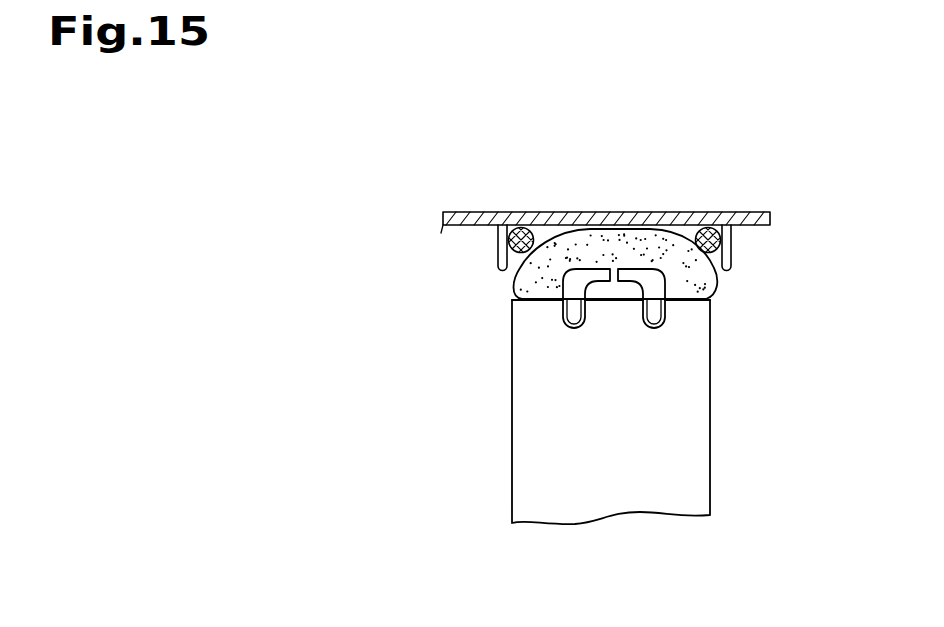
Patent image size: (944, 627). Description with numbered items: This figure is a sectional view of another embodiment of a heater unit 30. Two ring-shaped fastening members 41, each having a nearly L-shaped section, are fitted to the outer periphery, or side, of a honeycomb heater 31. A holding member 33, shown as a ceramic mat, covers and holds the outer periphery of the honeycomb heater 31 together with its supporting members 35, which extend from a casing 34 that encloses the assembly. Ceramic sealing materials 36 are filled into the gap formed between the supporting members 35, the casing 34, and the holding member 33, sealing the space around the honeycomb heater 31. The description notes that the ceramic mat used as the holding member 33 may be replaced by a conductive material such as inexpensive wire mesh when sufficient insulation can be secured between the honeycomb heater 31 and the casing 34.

The heater unit 30 is at (668, 169).
The honeycomb heater 31 is at (711, 440).
The holding member 33 is at (716, 291).
The casing 34 is at (463, 212).
The supporting members 35 is at (731, 258).
The ceramic sealing material 36 is at (713, 228).
The ring-shaped fastening members 41 is at (627, 279).